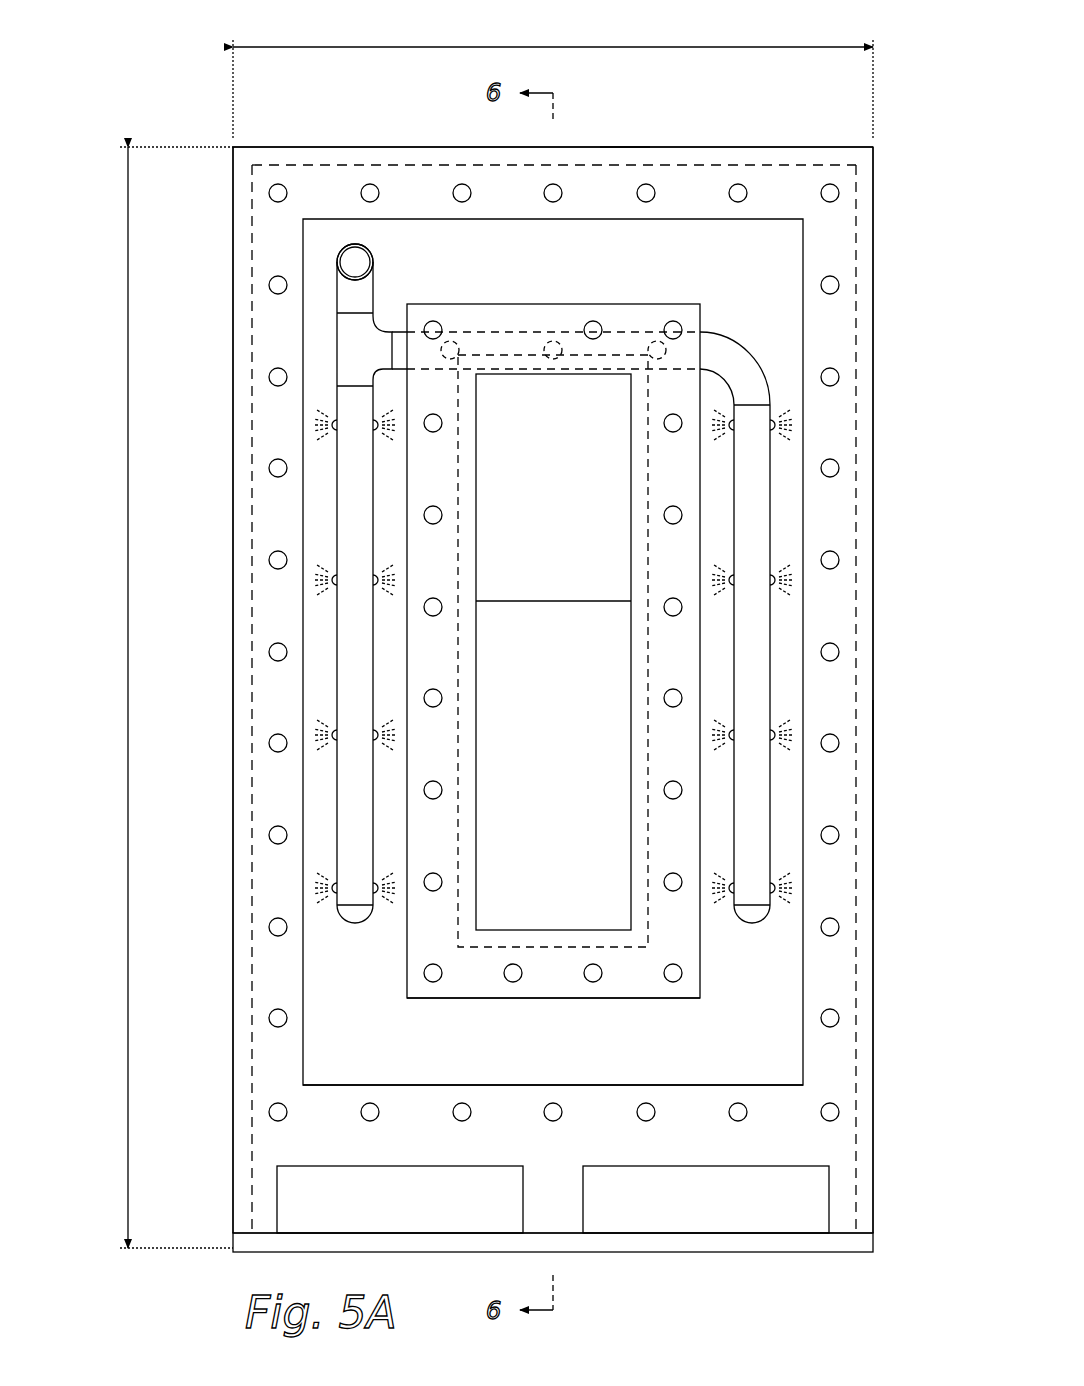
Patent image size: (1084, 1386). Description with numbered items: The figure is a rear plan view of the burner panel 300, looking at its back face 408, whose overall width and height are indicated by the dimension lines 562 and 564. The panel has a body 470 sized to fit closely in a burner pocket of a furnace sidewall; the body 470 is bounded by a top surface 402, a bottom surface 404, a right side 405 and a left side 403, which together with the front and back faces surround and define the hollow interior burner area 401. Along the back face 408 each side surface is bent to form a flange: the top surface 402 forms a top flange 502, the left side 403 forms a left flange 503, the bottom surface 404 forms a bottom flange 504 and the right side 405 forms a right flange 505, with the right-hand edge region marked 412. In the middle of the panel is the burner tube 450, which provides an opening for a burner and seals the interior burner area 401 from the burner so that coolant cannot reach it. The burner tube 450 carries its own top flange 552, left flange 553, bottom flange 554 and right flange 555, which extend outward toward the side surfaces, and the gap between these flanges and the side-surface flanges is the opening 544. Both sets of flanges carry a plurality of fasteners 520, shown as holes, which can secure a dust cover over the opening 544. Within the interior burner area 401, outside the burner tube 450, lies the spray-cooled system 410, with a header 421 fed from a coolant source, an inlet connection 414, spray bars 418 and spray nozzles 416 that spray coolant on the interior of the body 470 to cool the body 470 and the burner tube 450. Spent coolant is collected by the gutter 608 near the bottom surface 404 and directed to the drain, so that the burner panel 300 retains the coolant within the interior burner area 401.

The burner panel 300 is at (165, 55).
The interior burner area 401 is at (752, 968).
The top surface 402 is at (346, 147).
The left side 403 is at (875, 508).
The bottom surface 404 is at (705, 1254).
The right side 405 is at (233, 421).
The back face 408 is at (838, 686).
The spray-cooled system 410 is at (722, 332).
The side wall edge 412 is at (875, 806).
The pipe inlet 414 is at (365, 262).
The spray nozzles 416 is at (380, 735).
The spray bars 418 is at (335, 742).
The header 421 is at (350, 860).
The burner tube 450 is at (572, 771).
The body 470 is at (626, 147).
The top flange 502 is at (418, 185).
The left flange 503 is at (838, 323).
The bottom flange 504 is at (690, 1120).
The right flange 505 is at (268, 338).
The fasteners 520 is at (270, 1112).
The opening 544 is at (690, 255).
The top flange 552 is at (506, 312).
The left flange 553 is at (665, 842).
The bottom flange 554 is at (490, 975).
The right flange 555 is at (443, 653).
The width dimension 562 is at (551, 45).
The height dimension 564 is at (128, 618).
The gutter 608 is at (568, 1058).